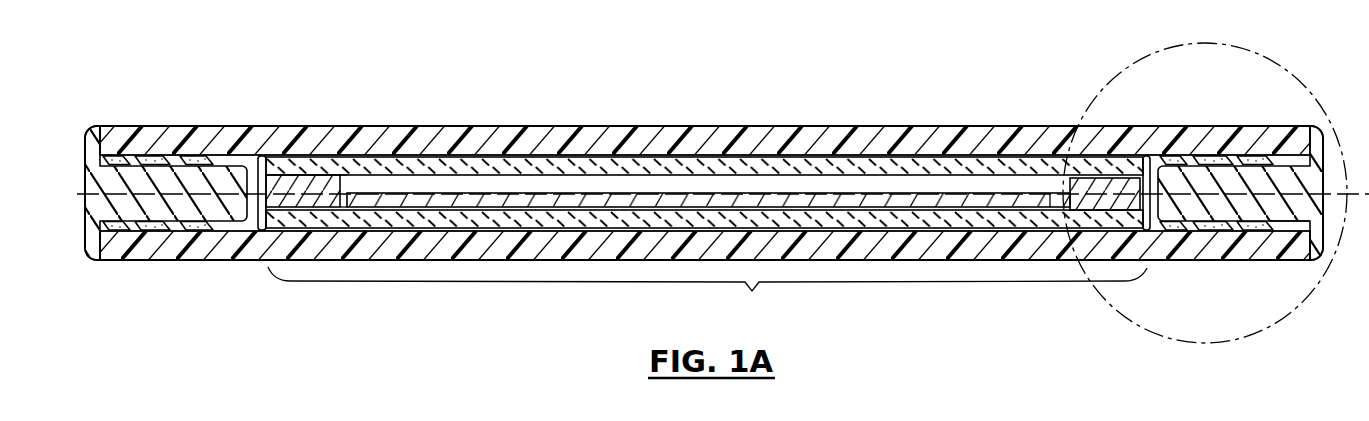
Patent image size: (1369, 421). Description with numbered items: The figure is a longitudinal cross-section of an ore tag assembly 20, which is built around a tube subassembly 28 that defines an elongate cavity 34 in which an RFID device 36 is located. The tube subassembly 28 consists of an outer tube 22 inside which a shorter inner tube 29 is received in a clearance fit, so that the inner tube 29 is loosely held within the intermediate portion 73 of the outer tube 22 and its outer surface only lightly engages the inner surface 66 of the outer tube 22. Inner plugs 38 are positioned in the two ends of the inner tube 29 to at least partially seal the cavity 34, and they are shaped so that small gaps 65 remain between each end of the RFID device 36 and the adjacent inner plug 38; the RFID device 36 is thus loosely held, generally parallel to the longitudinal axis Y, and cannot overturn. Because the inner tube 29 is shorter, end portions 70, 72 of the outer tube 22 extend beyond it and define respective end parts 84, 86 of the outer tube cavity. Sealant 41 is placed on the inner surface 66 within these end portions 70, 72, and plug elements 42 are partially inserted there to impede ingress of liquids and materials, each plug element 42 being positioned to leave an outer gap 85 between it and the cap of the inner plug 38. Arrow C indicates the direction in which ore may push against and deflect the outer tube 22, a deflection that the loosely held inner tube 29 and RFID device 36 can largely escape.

The ore tag assembly 20 is at (517, 88).
The outer tube 22 is at (883, 132).
The tube subassembly 28 is at (763, 116).
The inner tube 29 is at (645, 158).
The cavity 34 is at (603, 183).
The RFID device 36 is at (803, 184).
The inner plug 38 is at (303, 188).
The sealant 41 is at (203, 232).
The plug element 42 is at (100, 212).
The small gap 65 is at (343, 188).
The inner surface of the outer tube 66 is at (1301, 234).
The first end portion of the outer tube 70 is at (160, 248).
The second end portion of the outer tube 72 is at (1213, 140).
The intermediate portion of the outer tube 73 is at (707, 298).
The first end part of the outer tube cavity 84 is at (228, 153).
The outer gap 85 is at (254, 187).
The second end part of the outer tube cavity 86 is at (1327, 118).
The arrow C is at (741, 119).
The longitudinal axis Y is at (163, 196).